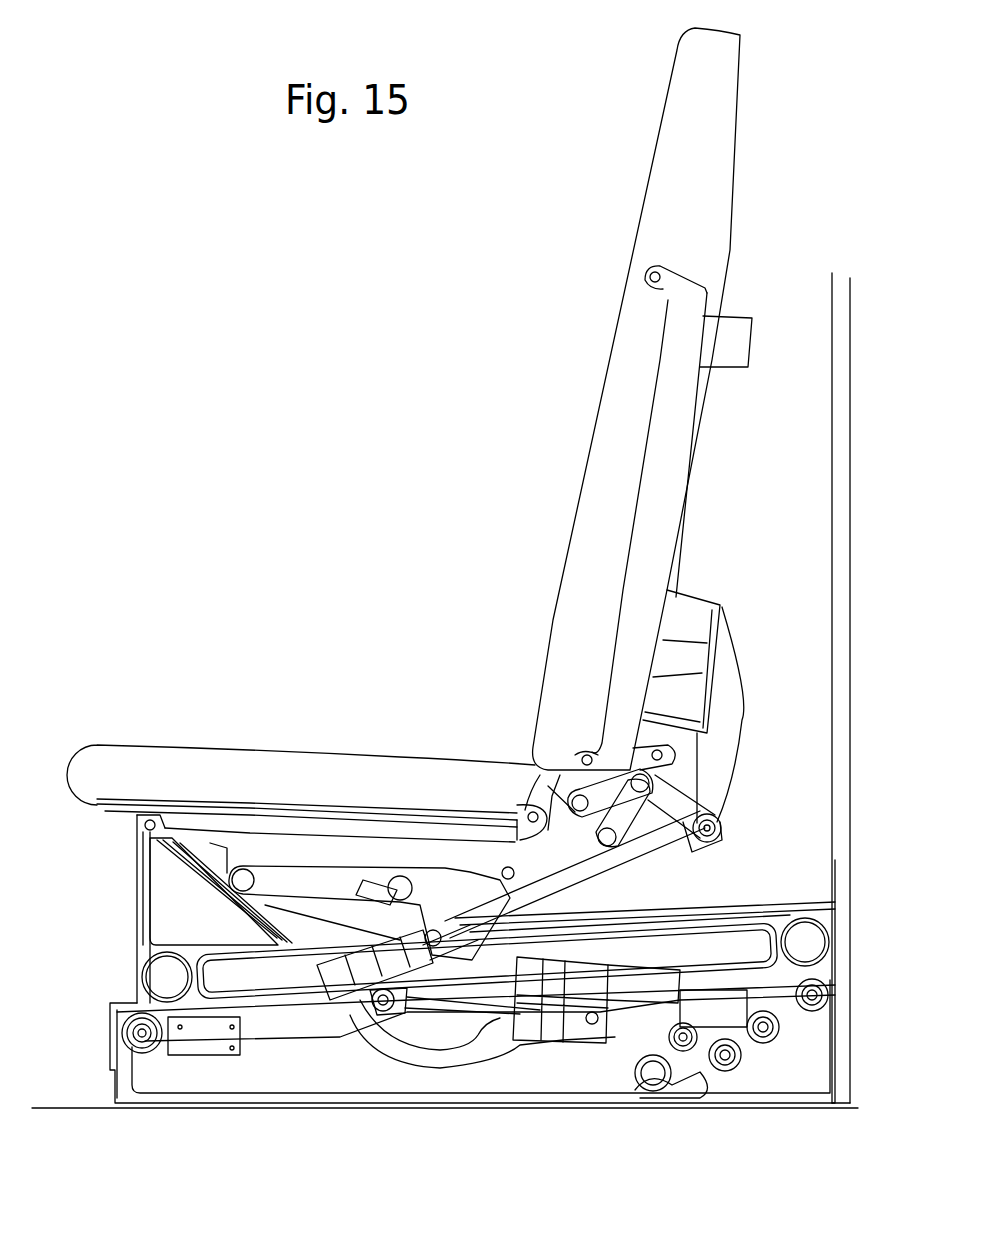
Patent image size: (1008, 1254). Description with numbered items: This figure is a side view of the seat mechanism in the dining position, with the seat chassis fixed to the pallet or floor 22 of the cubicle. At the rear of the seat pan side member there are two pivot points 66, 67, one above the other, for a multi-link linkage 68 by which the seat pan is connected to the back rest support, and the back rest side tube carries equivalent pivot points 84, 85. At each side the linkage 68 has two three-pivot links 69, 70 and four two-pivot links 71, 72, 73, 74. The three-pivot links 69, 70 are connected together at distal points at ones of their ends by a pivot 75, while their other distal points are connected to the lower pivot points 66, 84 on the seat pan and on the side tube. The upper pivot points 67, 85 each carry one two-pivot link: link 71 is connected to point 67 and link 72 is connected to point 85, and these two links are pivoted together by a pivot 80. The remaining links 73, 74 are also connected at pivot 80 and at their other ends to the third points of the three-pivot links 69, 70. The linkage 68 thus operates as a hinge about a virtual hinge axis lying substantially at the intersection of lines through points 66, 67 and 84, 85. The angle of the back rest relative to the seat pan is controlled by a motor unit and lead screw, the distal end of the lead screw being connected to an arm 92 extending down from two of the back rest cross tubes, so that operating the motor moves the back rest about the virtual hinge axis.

The pallet or floor 22 is at (92, 1107).
The pivot point 66 is at (500, 872).
The pivot point 67 is at (520, 814).
The multi-link linkage 68 is at (503, 726).
The three-pivot link 69 is at (560, 855).
The three-pivot link 70 is at (722, 836).
The two-pivot link 71 is at (560, 810).
The two-pivot link 72 is at (578, 778).
The two-pivot link 73 is at (545, 812).
The two-pivot link 74 is at (680, 792).
The pivot 75 is at (640, 838).
The pivot 80 is at (560, 768).
The pivot point 84 is at (715, 745).
The pivot point 85 is at (585, 747).
The arm 92 is at (723, 680).